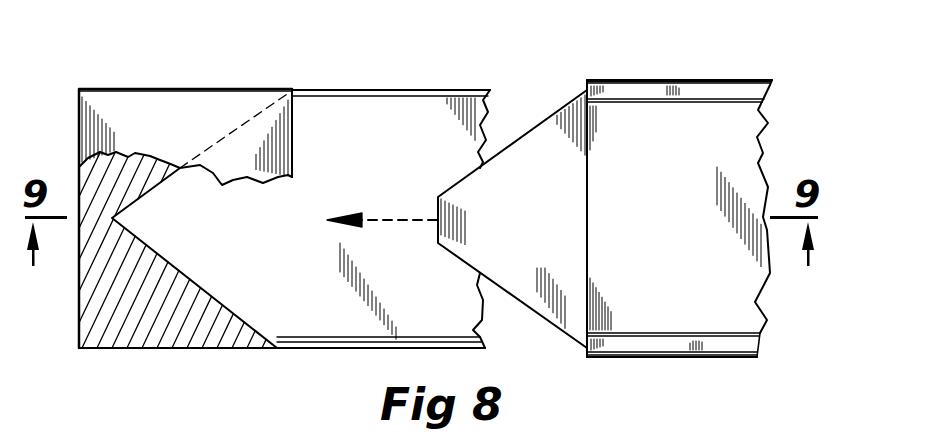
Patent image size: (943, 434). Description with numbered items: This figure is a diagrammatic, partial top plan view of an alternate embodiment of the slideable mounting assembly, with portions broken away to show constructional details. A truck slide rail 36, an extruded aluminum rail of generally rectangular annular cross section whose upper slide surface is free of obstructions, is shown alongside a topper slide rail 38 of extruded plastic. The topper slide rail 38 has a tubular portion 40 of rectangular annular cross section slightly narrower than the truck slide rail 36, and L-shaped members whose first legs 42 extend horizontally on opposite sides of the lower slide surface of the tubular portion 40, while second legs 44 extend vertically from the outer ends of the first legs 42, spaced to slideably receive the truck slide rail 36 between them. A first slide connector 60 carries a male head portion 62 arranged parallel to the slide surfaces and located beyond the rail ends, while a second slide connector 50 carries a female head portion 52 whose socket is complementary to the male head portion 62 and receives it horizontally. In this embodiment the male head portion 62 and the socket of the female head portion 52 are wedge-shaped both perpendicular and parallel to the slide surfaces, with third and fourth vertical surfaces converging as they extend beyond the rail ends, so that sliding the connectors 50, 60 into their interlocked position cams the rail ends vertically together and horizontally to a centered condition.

The truck slide rail 36 is at (398, 88).
The topper slide rail 38 is at (721, 218).
The tubular portion 40 is at (678, 220).
The first leg 42 is at (773, 88).
The second leg 44 is at (658, 79).
The second slide connector 50 is at (268, 177).
The female head portion 52 is at (154, 88).
The first slide connector 60 is at (512, 201).
The male head portion 62 is at (532, 300).